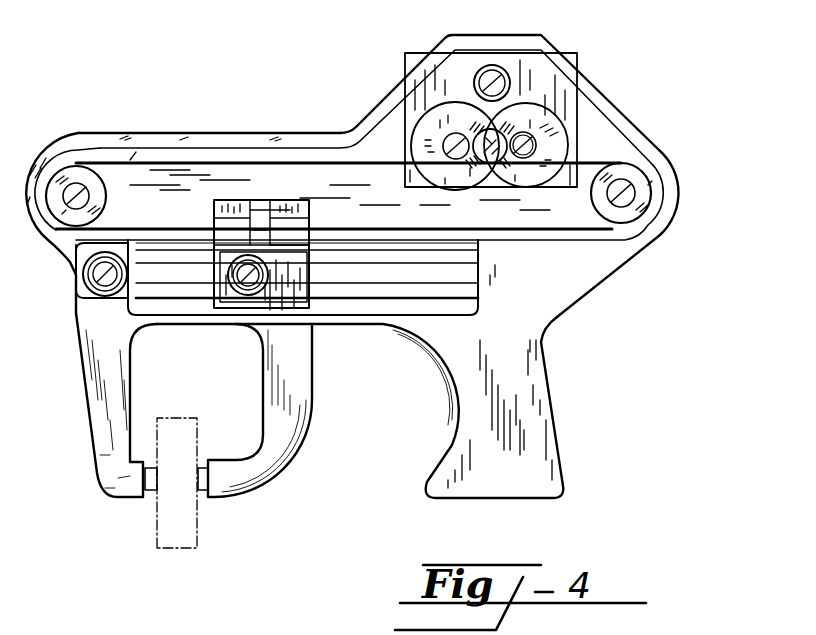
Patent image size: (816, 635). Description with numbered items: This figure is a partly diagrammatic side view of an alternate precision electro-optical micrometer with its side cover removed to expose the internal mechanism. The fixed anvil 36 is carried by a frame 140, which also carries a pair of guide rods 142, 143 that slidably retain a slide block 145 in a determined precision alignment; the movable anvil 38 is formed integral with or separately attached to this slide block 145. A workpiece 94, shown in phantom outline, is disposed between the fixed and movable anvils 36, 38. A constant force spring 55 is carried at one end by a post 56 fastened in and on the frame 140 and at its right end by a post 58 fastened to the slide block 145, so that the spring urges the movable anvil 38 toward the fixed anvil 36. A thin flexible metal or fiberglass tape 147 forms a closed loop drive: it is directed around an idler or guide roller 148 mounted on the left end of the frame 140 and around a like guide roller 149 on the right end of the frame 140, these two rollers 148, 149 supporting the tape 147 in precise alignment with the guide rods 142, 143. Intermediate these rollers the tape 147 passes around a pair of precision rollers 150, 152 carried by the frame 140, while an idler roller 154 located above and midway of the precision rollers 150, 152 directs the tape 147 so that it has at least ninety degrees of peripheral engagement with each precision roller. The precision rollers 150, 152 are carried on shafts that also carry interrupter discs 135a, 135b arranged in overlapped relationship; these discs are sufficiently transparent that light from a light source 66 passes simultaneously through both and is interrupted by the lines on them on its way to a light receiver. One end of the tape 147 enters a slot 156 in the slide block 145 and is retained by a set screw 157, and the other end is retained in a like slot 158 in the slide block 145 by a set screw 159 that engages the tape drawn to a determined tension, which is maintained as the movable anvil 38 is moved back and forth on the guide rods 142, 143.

The fixed anvil 36 is at (97, 460).
The movable anvil 38 is at (277, 460).
The constant force spring 55 is at (77, 260).
The post 56 is at (75, 294).
The post 58 is at (250, 292).
The light source 66 is at (491, 153).
The workpiece 94 is at (197, 545).
The interrupter disc 135a is at (430, 117).
The interrupter disc 135b is at (541, 100).
The frame 140 is at (222, 133).
The guide rod 142 is at (383, 293).
The guide rod 143 is at (377, 248).
The slide block 145 is at (213, 207).
The tape 147 is at (300, 160).
The guide roller 148 is at (96, 180).
The guide roller 149 is at (645, 186).
The precision roller 150 is at (445, 36).
The precision roller 152 is at (545, 128).
The idler roller 154 is at (491, 67).
The slot 156 is at (238, 227).
The set screw 157 is at (220, 197).
The slot 158 is at (300, 225).
The set screw 159 is at (288, 202).